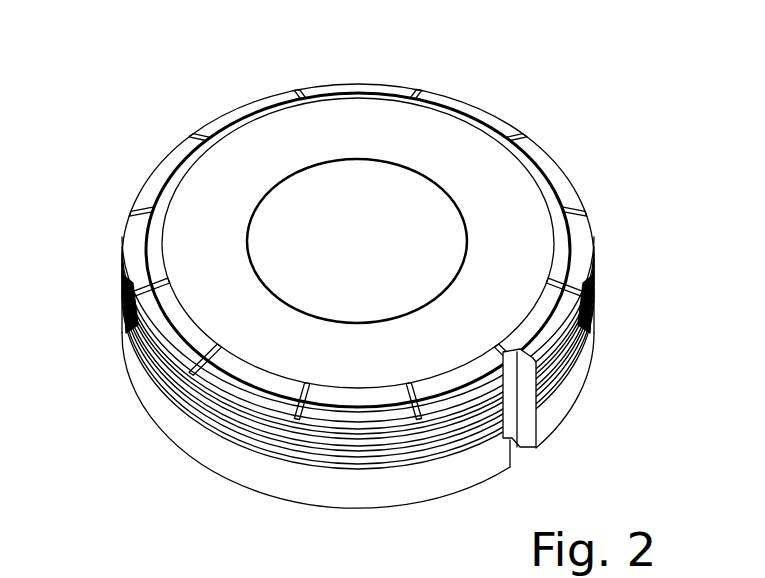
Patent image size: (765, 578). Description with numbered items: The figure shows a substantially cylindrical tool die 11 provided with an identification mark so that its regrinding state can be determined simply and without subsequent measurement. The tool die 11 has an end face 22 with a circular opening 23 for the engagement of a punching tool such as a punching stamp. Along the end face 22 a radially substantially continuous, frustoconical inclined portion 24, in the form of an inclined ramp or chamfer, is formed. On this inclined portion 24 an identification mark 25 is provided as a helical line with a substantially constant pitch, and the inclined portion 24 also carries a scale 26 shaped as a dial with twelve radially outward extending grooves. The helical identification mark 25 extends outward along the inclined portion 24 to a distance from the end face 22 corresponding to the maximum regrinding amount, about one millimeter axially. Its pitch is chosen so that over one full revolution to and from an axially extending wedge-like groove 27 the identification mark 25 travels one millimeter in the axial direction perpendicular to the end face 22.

The tool die 11 is at (560, 130).
The end face 22 is at (346, 118).
The circular opening 23 is at (302, 210).
The inclined portion 24 is at (572, 247).
The identification mark 25 is at (142, 349).
The scale 26 is at (297, 403).
The wedge-like groove 27 is at (513, 398).